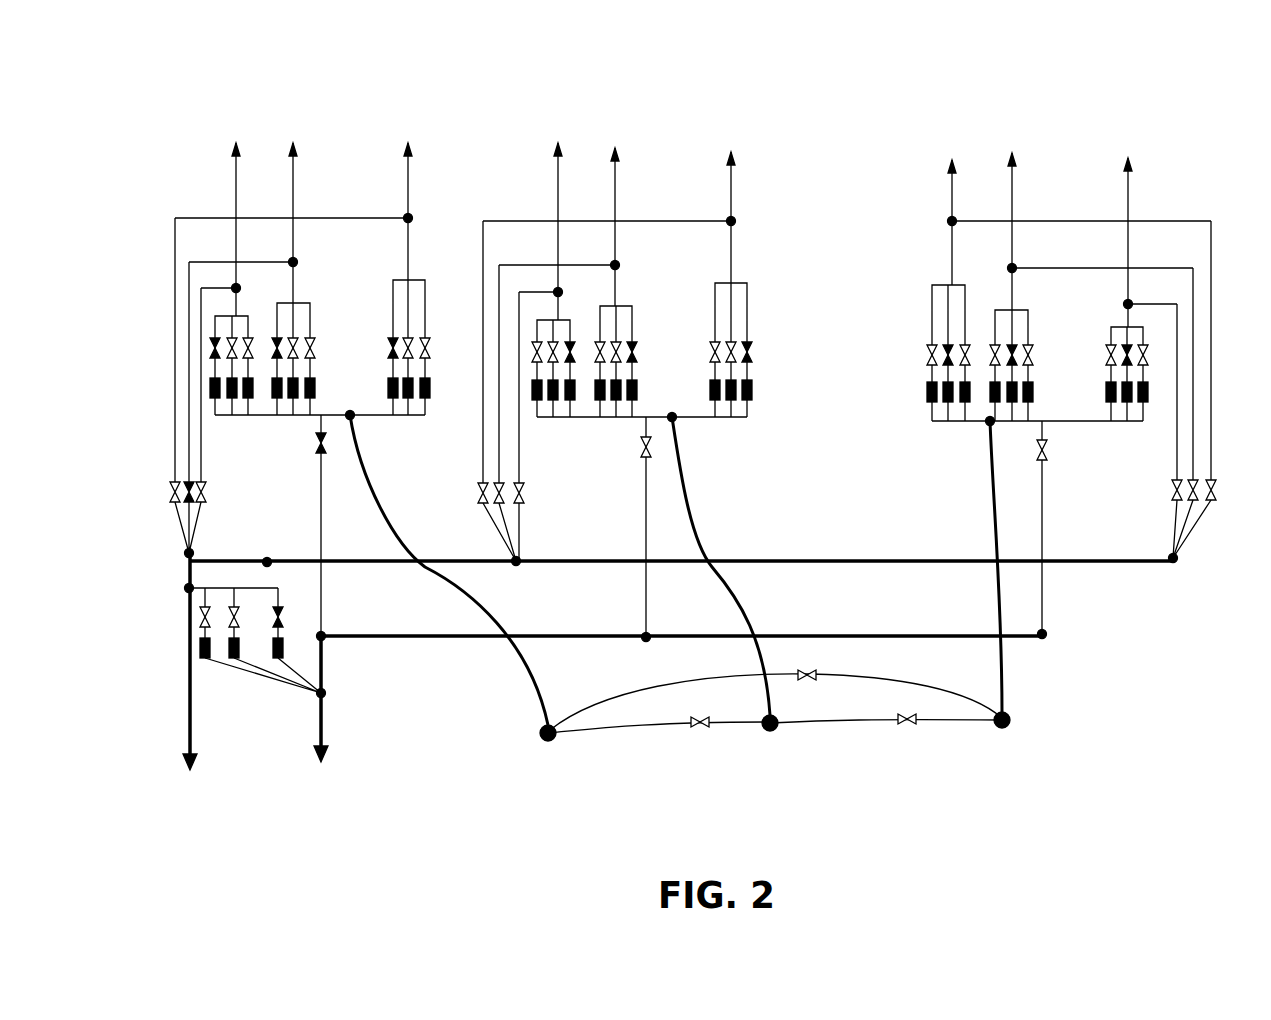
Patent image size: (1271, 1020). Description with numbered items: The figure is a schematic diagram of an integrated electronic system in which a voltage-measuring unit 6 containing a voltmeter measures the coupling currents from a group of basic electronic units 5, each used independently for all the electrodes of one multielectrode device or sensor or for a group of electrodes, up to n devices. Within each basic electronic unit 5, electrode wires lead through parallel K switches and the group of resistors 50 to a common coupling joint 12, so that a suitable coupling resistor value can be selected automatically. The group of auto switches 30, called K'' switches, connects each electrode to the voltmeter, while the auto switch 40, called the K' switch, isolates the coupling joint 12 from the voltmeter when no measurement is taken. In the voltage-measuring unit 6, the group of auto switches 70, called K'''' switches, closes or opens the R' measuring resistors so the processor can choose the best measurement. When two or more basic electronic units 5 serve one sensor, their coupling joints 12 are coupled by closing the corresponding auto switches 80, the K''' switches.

The basic electronic unit 5 is at (196, 206).
The group of auto switches connecting each electrode to the voltmeter 30 is at (207, 518).
The auto switch connecting the coupling joint to the voltmeter 40 is at (330, 460).
The coupling joint 12 is at (530, 659).
The auto switches connecting coupling joints of basic electronic units 80 is at (697, 735).
The group of resistors 50 is at (309, 616).
The group of auto switches that close or open the R' resistors 70 is at (241, 680).
The voltage-measuring unit 6 is at (176, 655).